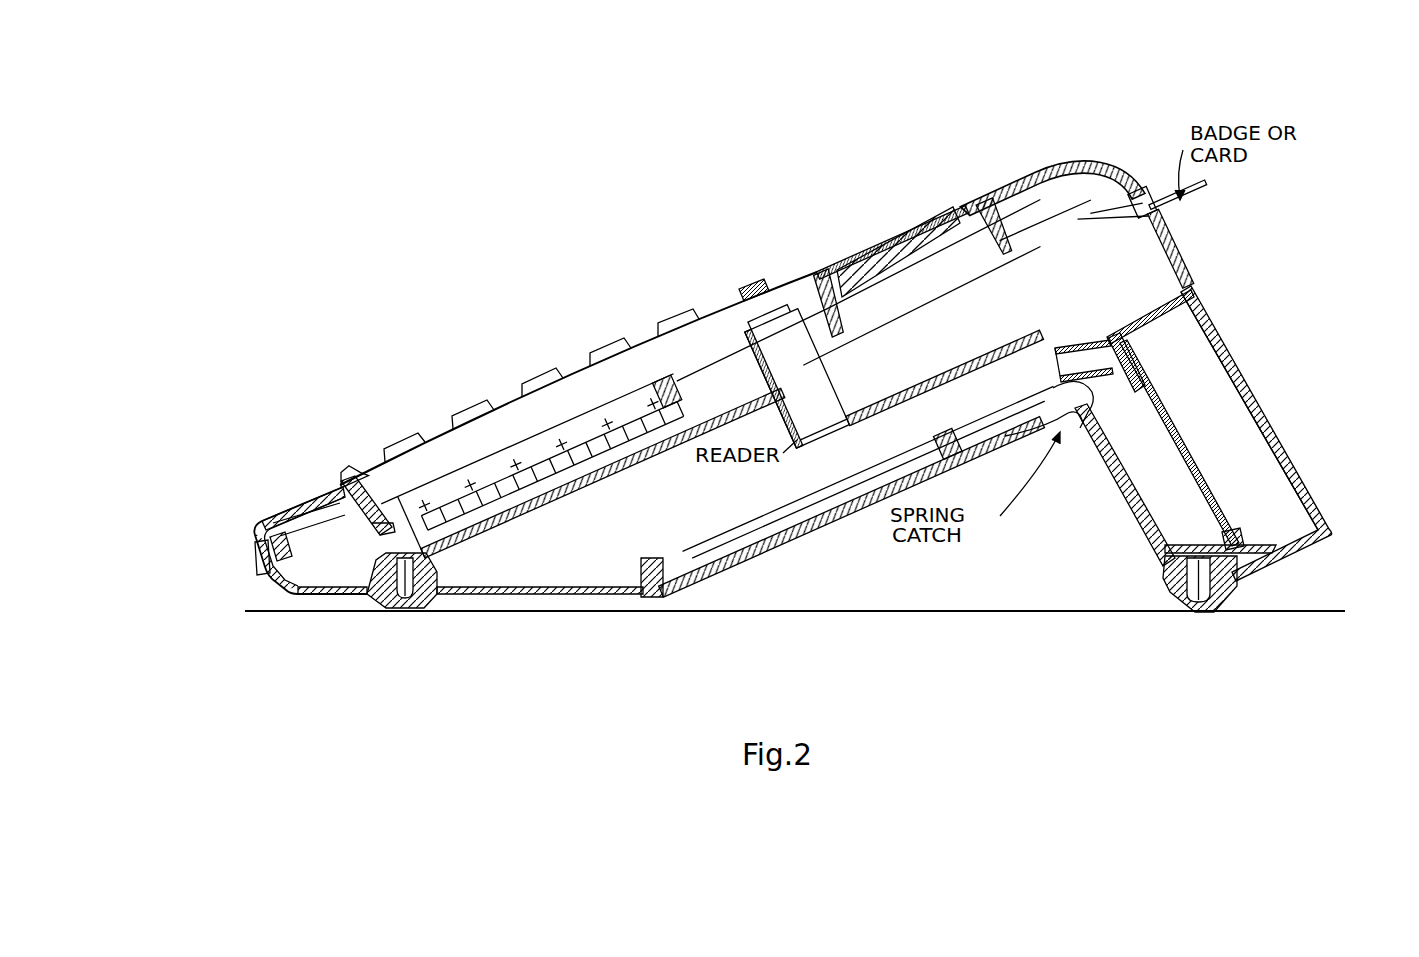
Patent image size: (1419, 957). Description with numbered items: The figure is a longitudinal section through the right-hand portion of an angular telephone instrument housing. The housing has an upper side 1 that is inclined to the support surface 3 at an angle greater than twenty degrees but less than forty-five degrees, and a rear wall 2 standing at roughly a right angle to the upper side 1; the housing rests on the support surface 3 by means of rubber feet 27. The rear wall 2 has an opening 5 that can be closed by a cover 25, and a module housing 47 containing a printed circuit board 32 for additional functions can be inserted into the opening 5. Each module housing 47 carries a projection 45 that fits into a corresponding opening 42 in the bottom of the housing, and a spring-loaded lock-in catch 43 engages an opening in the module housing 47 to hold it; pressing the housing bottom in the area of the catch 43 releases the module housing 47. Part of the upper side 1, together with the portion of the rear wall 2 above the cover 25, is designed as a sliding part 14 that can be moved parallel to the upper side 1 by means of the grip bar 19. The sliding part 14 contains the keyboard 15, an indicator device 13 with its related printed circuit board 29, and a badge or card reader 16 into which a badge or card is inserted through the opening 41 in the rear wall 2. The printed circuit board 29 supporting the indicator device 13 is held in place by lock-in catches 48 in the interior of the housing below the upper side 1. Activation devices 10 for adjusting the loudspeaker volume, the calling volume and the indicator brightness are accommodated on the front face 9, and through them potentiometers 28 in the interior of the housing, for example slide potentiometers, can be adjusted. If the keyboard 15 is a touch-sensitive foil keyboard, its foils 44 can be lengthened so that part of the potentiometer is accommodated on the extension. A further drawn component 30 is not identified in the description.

The upper side 1 is at (318, 490).
The rear wall 2 is at (1248, 378).
The support surface 3 is at (1100, 613).
The openings 5 is at (1243, 442).
The front face 9 is at (280, 577).
The activation devices 10 is at (263, 547).
The indicator device 13 is at (880, 250).
The sliding part 14 is at (650, 360).
The keyboard 15 is at (477, 490).
The badge or card reader 16 is at (968, 293).
The grip bar 19 is at (347, 480).
The covers 25 is at (1293, 460).
The rubber feet 27 is at (430, 590).
The potentiometers 28 is at (280, 510).
The printed circuit board 29 is at (1040, 237).
The bottom plate 30 is at (620, 473).
The printed circuit boards 32 is at (1232, 535).
The opening 41 is at (1158, 208).
The opening 42 is at (1120, 497).
The spring-loaded lock-in catch 43 is at (1053, 430).
The foils 44 is at (373, 523).
The projection 45 is at (1083, 423).
The module housing 47 is at (1157, 547).
The lock-in catches 48 is at (818, 273).